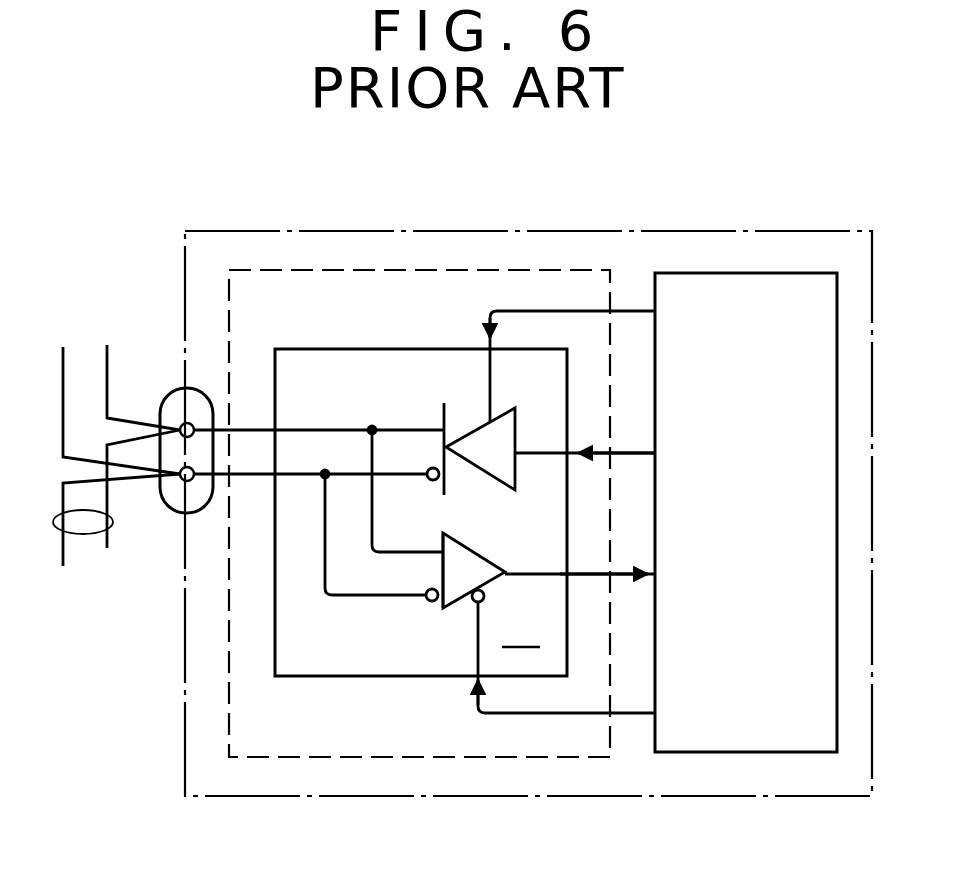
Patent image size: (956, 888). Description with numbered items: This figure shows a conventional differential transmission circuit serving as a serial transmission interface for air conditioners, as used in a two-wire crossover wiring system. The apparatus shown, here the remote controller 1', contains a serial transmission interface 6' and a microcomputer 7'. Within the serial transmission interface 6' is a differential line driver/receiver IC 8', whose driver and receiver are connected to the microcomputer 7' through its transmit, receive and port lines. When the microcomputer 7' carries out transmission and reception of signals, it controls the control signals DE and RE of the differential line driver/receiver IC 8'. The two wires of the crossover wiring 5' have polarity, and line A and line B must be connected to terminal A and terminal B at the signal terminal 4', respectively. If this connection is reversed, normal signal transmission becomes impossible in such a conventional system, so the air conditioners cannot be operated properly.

The remote controller 1' is at (528, 548).
The signal terminal 4' is at (170, 474).
The crossover wiring 5' is at (101, 462).
The serial transmission interface 6' is at (419, 469).
The microcomputer 7' is at (746, 468).
The differential line driver/receiver IC 8' is at (424, 502).